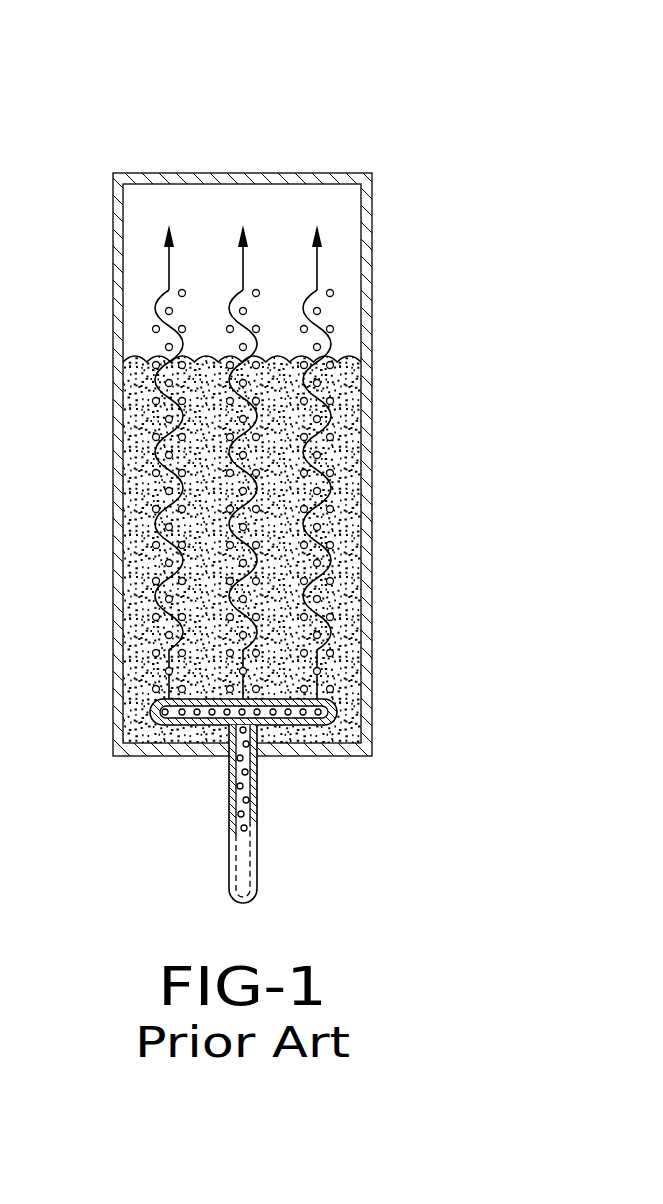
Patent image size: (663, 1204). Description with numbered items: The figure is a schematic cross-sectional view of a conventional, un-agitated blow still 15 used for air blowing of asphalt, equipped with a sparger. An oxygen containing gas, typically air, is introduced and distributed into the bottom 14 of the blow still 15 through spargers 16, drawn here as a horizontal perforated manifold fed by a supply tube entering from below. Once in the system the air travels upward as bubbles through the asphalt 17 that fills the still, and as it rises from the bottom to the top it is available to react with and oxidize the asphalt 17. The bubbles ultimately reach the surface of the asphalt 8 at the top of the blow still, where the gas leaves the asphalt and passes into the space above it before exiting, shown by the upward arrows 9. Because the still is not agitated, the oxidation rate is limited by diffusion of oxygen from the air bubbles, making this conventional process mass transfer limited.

The blow still 15 is at (331, 459).
The bottom of the blow still 14 is at (310, 756).
The asphalt 17 is at (283, 423).
The surface of the asphalt 8 is at (163, 362).
The gas exiting headspace 9 is at (203, 213).
The spargers 16 is at (192, 725).